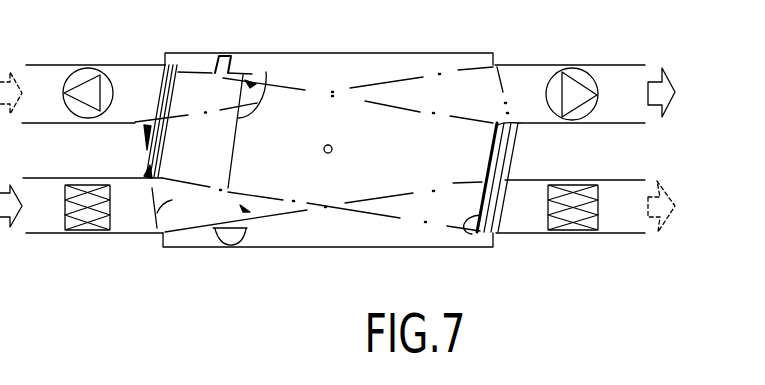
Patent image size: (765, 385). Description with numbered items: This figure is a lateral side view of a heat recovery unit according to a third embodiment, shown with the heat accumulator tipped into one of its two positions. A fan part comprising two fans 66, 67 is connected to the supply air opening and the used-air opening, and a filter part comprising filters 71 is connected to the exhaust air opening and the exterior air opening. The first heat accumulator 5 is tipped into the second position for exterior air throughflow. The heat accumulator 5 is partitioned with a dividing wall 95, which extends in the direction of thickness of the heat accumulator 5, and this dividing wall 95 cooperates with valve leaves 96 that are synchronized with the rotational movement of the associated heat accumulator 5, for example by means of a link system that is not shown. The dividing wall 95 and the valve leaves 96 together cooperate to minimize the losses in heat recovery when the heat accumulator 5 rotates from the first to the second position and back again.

The fan 66 is at (94, 66).
The fan 67 is at (562, 67).
The filter 71 is at (83, 235).
The first heat accumulator 5 is at (143, 240).
The dividing wall 95 is at (266, 74).
The valve leaves 96 is at (238, 52).